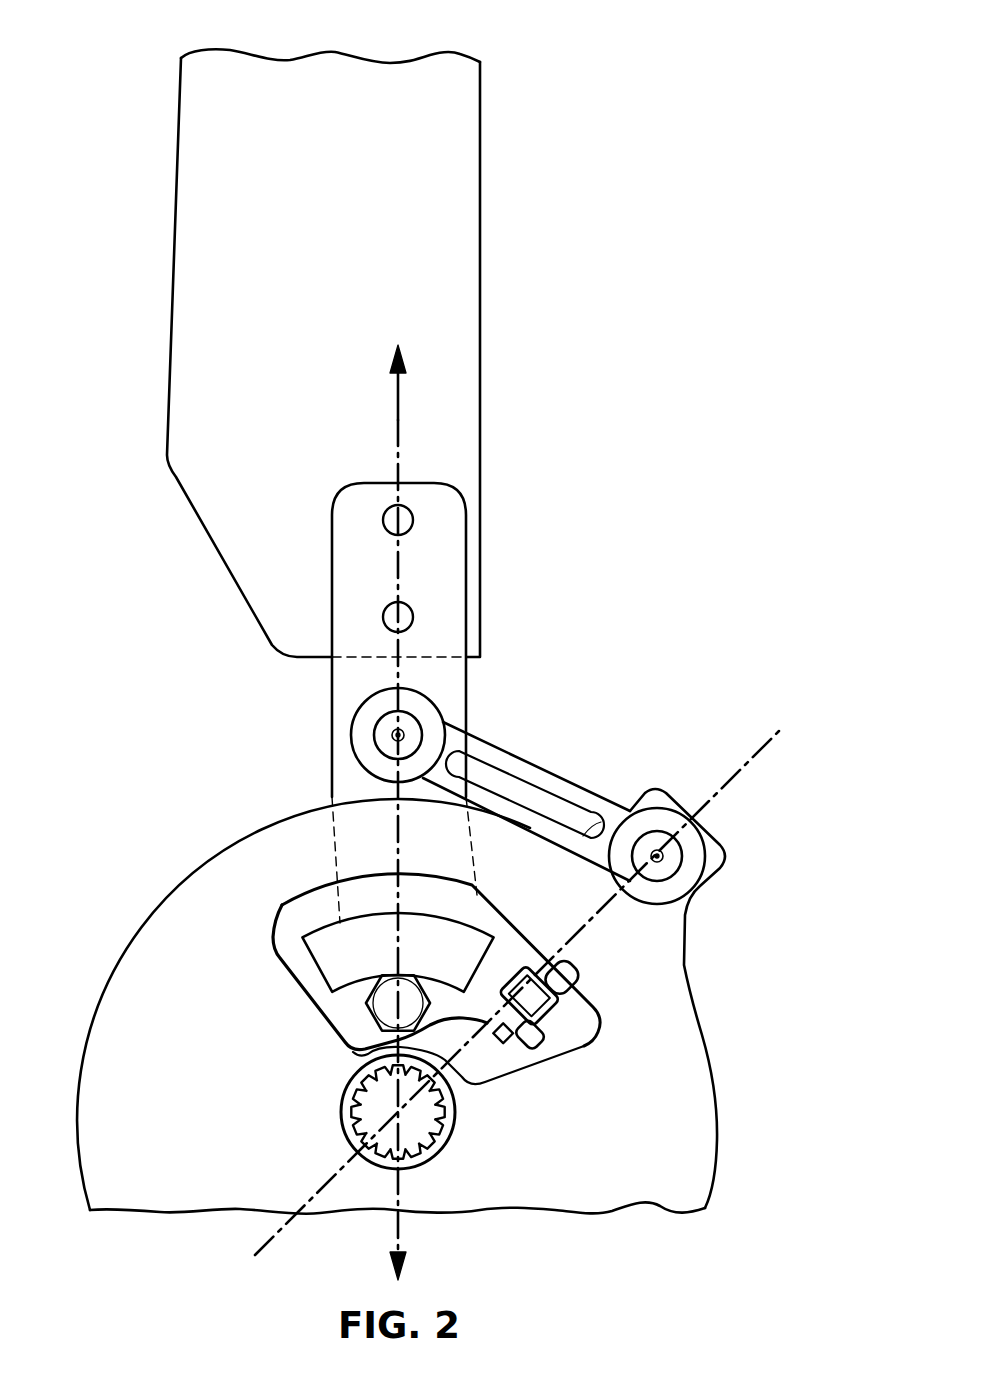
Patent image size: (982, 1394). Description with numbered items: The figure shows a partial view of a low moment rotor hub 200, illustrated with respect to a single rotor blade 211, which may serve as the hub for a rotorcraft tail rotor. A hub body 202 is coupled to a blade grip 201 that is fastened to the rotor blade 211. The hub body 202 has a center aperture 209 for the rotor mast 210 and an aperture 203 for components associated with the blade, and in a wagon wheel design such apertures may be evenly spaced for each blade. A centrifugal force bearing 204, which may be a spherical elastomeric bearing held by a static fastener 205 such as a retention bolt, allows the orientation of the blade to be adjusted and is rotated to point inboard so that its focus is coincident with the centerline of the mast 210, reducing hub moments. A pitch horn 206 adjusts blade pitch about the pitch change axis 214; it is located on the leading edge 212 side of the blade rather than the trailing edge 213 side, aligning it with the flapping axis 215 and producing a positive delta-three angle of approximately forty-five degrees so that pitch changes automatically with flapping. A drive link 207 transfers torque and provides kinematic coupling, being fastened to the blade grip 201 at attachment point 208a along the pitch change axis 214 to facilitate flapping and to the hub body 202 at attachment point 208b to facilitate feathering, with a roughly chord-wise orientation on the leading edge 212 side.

The rotor hub 200 is at (649, 600).
The blade grip 201 is at (332, 703).
The hub body 202 is at (190, 877).
The aperture 203 is at (518, 908).
The centrifugal force bearing 204 is at (322, 920).
The static fastener 205 is at (363, 1003).
The pitch horn 206 is at (560, 1022).
The drive link 207 is at (536, 765).
The attachment point 208a is at (372, 735).
The attachment point 208b is at (679, 872).
The center aperture 209 is at (455, 1112).
The rotor mast 210 is at (352, 1118).
The rotor blade 211 is at (178, 152).
The leading edge 212 is at (510, 269).
The trailing edge 213 is at (144, 270).
The pitch change axis 214 is at (397, 403).
The flapping axis 215 is at (766, 748).